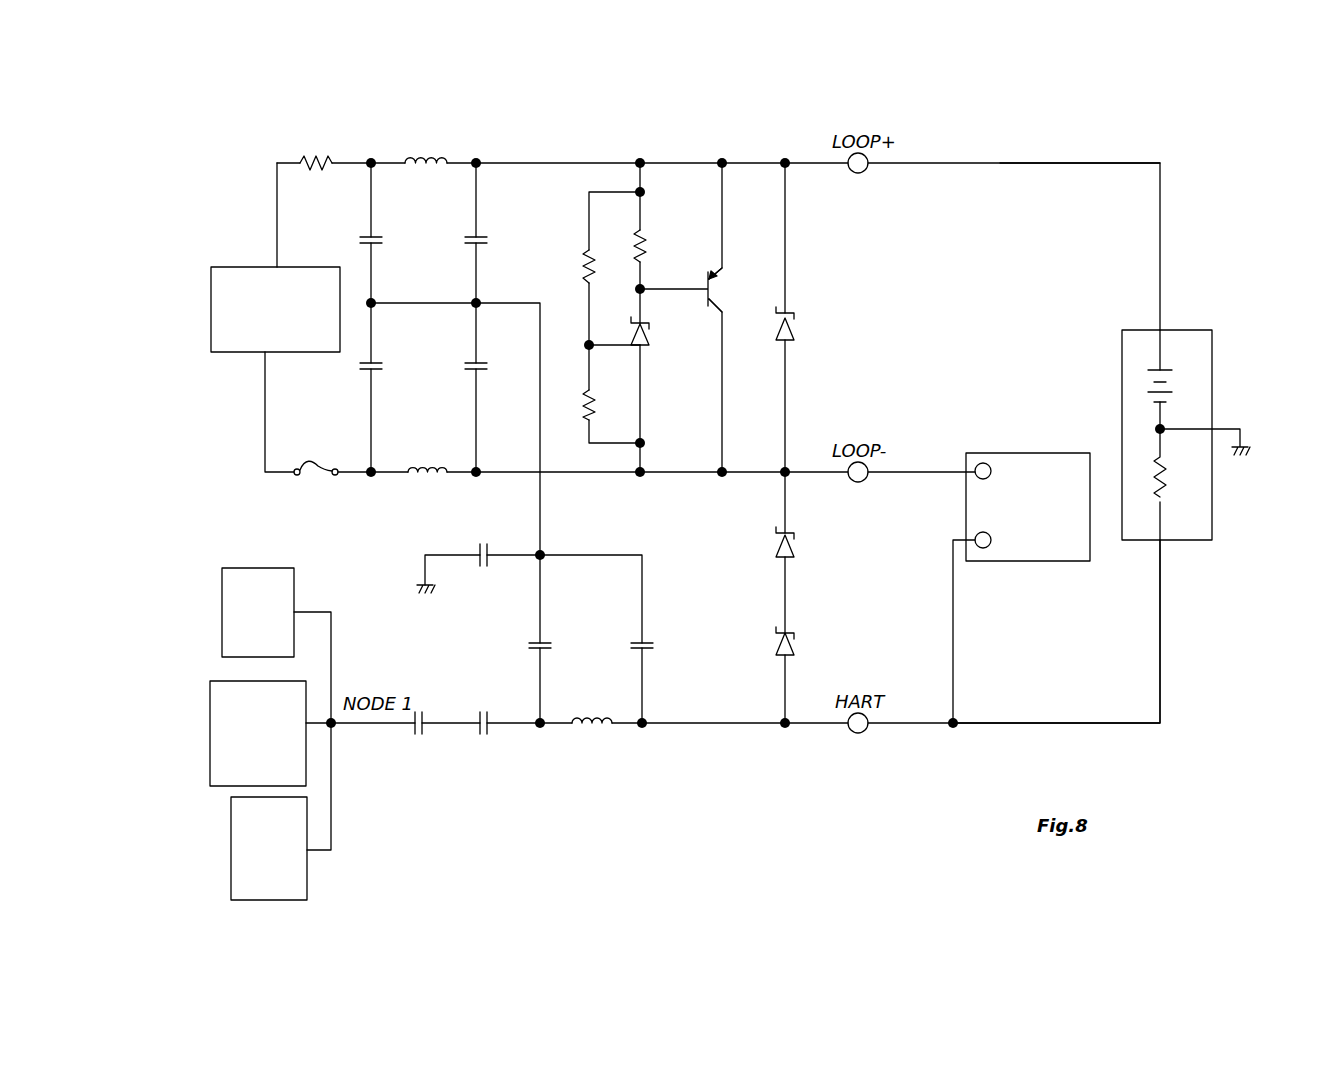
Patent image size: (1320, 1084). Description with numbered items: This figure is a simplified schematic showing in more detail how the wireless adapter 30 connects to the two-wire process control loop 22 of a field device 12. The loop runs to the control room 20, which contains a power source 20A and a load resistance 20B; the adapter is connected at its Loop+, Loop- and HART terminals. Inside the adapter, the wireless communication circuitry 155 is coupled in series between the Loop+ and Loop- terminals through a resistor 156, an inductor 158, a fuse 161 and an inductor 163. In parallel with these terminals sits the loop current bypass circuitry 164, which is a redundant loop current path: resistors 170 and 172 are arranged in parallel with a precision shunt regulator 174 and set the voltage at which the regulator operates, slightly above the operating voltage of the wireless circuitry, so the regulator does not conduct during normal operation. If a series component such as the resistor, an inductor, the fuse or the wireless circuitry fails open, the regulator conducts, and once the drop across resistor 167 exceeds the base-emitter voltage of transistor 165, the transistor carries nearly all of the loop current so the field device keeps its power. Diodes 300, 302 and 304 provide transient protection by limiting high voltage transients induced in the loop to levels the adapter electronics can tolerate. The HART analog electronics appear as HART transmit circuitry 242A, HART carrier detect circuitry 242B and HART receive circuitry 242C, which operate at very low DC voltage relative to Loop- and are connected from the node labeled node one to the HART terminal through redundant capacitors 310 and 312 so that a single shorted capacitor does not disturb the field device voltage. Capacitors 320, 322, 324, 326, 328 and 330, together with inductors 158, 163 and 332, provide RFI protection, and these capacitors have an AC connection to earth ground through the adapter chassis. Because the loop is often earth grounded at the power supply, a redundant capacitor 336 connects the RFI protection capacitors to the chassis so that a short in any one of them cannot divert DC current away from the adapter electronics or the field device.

The resistor 156 is at (304, 158).
The inductor 158 is at (424, 157).
The capacitor 324 is at (378, 234).
The capacitor 320 is at (486, 234).
The capacitor 326 is at (380, 362).
The capacitor 322 is at (481, 360).
The wireless communication circuitry 155 is at (251, 266).
The fuse 161 is at (322, 476).
The inductor 163 is at (404, 466).
The capacitor 336 is at (472, 551).
The capacitor 328 is at (546, 642).
The capacitor 330 is at (646, 642).
The inductor 332 is at (585, 721).
The capacitor 310 is at (424, 728).
The capacitor 312 is at (489, 728).
The HART transmit circuitry 242A is at (244, 568).
The HART carrier detect circuitry 242B is at (234, 684).
The HART receive circuitry 242C is at (231, 828).
The resistor 167 is at (643, 241).
The resistor 170 is at (580, 264).
The resistor 172 is at (584, 400).
The precision shunt regulator 174 is at (646, 347).
The transistor 165 is at (718, 279).
The diode 300 is at (788, 332).
The diode 302 is at (788, 550).
The diode 304 is at (796, 652).
The loop current bypass circuitry 164 is at (840, 283).
The wireless adapter 30 is at (1028, 150).
The two-wire process control loop 22 is at (1000, 164).
The field device 12 is at (1028, 507).
The control room 20 is at (1185, 330).
The power source 20A is at (1212, 385).
The load resistance 20B is at (1185, 520).